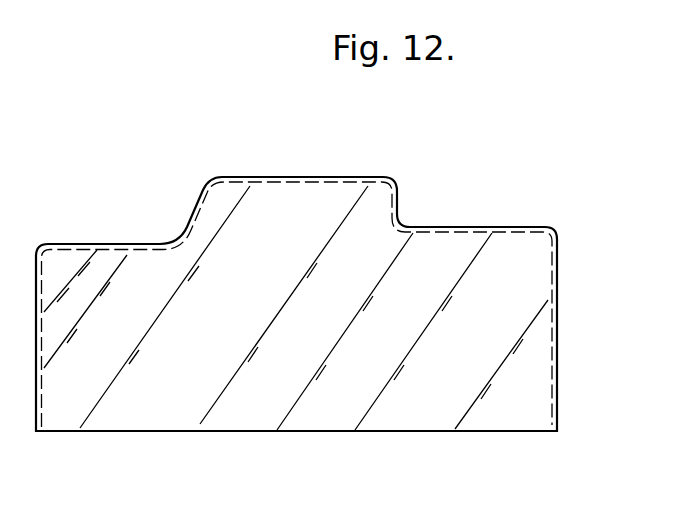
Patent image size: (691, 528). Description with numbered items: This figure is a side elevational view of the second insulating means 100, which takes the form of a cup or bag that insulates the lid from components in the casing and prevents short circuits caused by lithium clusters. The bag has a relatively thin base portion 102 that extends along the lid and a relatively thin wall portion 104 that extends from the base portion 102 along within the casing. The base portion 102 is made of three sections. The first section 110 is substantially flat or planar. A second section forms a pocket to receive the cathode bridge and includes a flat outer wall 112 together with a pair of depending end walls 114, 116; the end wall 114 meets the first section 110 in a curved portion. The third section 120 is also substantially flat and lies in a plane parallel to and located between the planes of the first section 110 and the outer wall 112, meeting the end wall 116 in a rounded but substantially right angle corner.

The second insulating means 100 is at (160, 212).
The base portion 102 is at (78, 244).
The wall portion 104 is at (172, 388).
The first section 110 is at (117, 244).
The outer wall 112 is at (262, 177).
The end wall 114 is at (200, 209).
The end wall 116 is at (397, 205).
The third section 120 is at (440, 226).